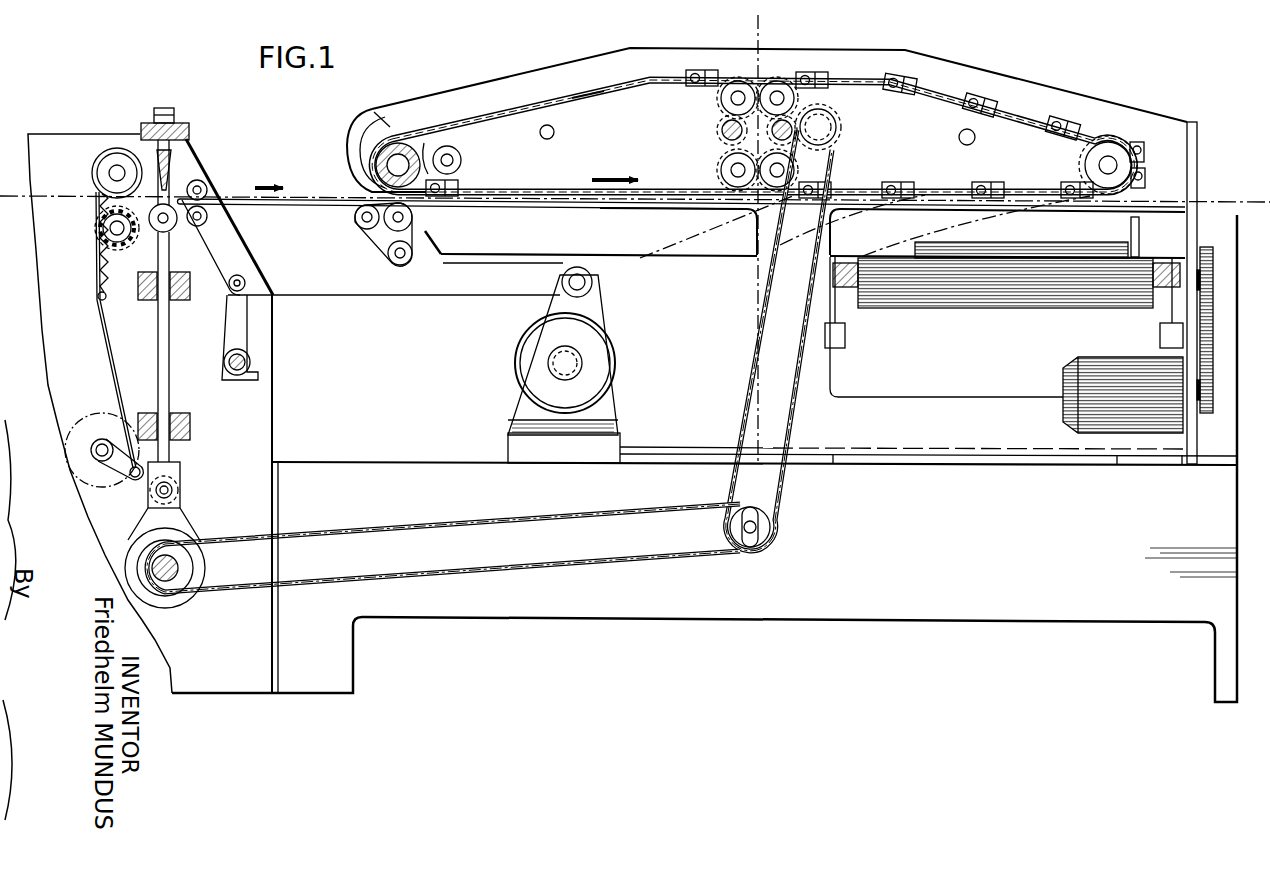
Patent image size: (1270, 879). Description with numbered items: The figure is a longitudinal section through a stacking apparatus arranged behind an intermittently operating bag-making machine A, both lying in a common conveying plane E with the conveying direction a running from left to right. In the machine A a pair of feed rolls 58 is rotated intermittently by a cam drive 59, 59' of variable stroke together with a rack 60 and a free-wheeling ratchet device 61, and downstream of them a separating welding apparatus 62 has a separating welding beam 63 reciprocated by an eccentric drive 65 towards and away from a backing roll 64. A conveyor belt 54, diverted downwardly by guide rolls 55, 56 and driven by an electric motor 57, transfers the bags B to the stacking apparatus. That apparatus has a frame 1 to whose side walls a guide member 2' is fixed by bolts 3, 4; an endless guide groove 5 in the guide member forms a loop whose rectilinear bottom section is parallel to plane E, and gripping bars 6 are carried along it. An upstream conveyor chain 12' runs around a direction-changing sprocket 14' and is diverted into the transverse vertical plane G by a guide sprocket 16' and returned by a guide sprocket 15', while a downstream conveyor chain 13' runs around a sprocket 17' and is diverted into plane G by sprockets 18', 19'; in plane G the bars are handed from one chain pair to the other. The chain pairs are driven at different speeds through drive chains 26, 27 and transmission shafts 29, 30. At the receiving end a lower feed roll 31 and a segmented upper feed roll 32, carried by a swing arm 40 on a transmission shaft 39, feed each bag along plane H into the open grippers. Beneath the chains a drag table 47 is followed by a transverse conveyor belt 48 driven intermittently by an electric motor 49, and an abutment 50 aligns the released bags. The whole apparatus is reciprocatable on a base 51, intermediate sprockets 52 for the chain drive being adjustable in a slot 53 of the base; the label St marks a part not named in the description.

The frame 1 is at (1026, 88).
The guide member 2' is at (369, 107).
The bolt 3 is at (551, 139).
The bolt 4 is at (970, 145).
The guide groove 5 is at (545, 100).
The gripping bar 6 is at (495, 200).
The conveyor chain 12' is at (596, 111).
The conveyor chain 13' is at (910, 104).
The direction-changing sprocket 14' is at (422, 127).
The guide sprocket 15' is at (715, 98).
The guide sprocket 16' is at (713, 170).
The sprocket 17' is at (1116, 139).
The sprocket 18' is at (791, 73).
The sprocket 19' is at (816, 170).
The drive chain 26 is at (395, 527).
The drive chain 27 is at (742, 397).
The transmission shaft 29 is at (722, 130).
The transmission shaft 30 is at (800, 125).
The feed roll 31 is at (413, 217).
The feed roll 32 is at (365, 188).
The transmission shaft 39 is at (462, 160).
The swing arm 40 is at (435, 152).
The drag table 47 is at (640, 258).
The transverse conveyor belt 48 is at (917, 295).
The electric motor 49 is at (1117, 370).
The abutment 50 is at (1140, 232).
The base 51 is at (987, 612).
The intermediate sprocket 52 is at (774, 524).
The slot 53 is at (757, 548).
The conveyor belt 54 is at (290, 206).
The guide roll 55 is at (357, 215).
The guide roll 56 is at (385, 258).
The electric motor 57 is at (522, 362).
The feed rolls 58 is at (110, 180).
The cam drive 59 is at (104, 469).
The cam drive 59' is at (98, 330).
The rack 60 is at (97, 262).
The free-wheeling ratchet device 61 is at (103, 228).
The separating welding apparatus 62 is at (187, 166).
The separating welding beam 63 is at (182, 127).
The backing roll 64 is at (198, 227).
The eccentric drive 65 is at (205, 572).
The bag-making machine A is at (110, 121).
The bag B is at (715, 230).
The conveying plane E is at (635, 186).
The transverse vertical plane G is at (743, 236).
The conveying plane of the feed rolls H is at (320, 205).
The conveying direction a is at (256, 188).
The rod St is at (1058, 252).